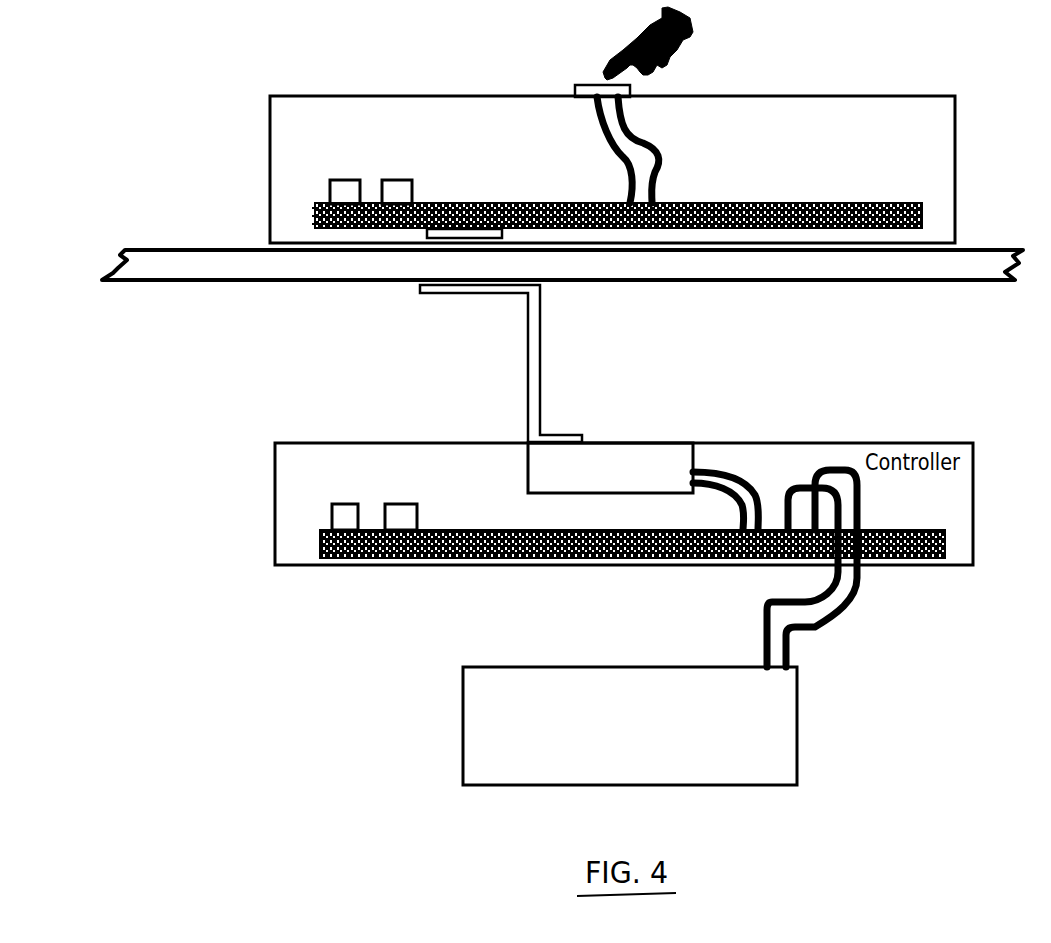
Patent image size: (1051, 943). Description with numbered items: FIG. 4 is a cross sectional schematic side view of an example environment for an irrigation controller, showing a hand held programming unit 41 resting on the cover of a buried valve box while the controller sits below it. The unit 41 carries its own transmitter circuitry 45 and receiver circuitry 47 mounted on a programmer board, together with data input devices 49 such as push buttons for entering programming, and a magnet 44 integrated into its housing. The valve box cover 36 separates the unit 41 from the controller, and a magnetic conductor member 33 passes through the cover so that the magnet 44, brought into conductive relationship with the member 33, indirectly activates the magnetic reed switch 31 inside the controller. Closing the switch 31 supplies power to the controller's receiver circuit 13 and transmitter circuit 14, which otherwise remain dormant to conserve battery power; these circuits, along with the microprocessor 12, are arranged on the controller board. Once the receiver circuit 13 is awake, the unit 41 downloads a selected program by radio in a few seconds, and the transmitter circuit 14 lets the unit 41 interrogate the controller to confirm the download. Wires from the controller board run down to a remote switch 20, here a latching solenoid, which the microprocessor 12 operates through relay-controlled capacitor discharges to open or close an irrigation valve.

The microprocessor 12 is at (588, 562).
The receiver circuit 13 is at (405, 513).
The transmitter circuit 14 is at (342, 518).
The remote switch 20 is at (662, 680).
The magnetic reed switch 31 is at (640, 458).
The member 33 is at (540, 383).
The valve box cover 36 is at (193, 262).
The hand held programming unit 41 is at (778, 110).
The magnet 44 is at (452, 232).
The transmitter circuitry 45 is at (400, 180).
The receiver circuitry 47 is at (340, 195).
The data input devices 49 is at (583, 85).